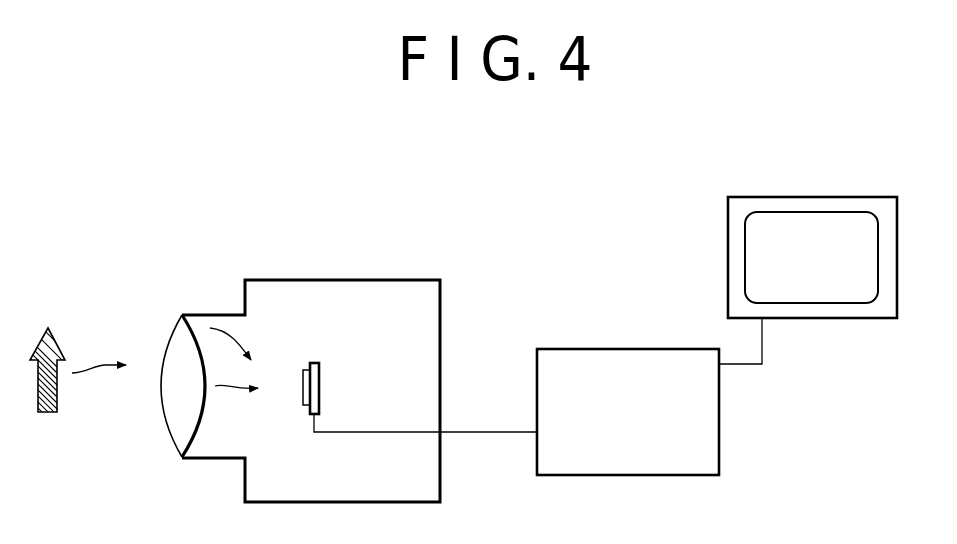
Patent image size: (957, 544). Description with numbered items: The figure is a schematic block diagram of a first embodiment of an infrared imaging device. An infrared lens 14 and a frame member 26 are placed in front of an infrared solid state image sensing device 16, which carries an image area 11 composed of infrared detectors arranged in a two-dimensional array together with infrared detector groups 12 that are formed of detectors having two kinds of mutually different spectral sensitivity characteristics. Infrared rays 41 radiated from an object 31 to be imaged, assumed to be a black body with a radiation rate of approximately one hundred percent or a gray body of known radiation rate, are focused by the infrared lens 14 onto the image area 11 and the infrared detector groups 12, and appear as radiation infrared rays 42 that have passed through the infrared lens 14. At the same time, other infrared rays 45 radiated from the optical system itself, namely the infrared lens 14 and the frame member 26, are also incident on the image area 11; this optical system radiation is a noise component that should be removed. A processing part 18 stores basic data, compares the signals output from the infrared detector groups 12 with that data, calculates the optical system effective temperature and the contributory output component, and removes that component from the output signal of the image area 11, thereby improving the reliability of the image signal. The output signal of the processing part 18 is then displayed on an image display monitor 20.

The object 31 is at (45, 326).
The infrared rays 41 is at (103, 329).
The infrared lens 14 is at (182, 315).
The frame member 26 is at (210, 315).
The other infrared rays 45 is at (265, 336).
The radiation infrared rays 42 is at (255, 425).
The infrared solid state image sensing device 16 is at (316, 363).
The image area 11 is at (312, 386).
The infrared detector groups 12 is at (320, 405).
The processing part 18 is at (623, 349).
The image display monitor 20 is at (808, 197).